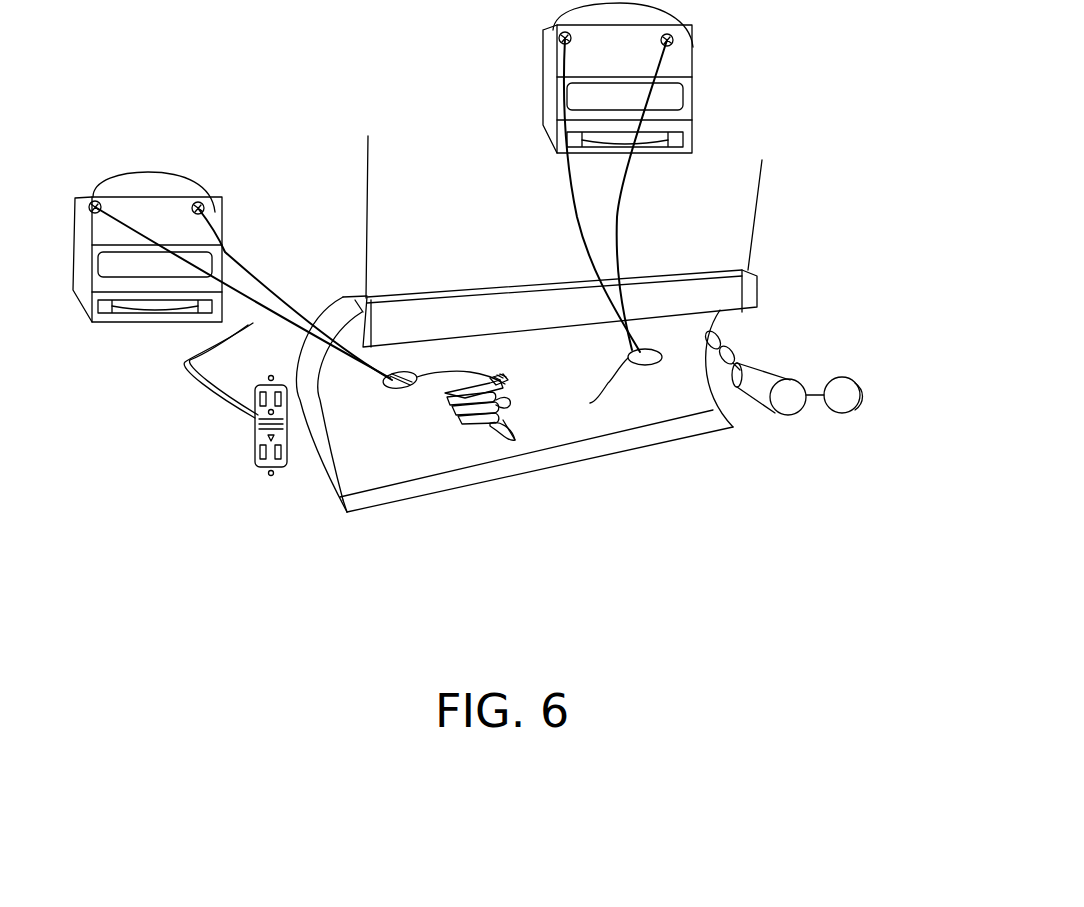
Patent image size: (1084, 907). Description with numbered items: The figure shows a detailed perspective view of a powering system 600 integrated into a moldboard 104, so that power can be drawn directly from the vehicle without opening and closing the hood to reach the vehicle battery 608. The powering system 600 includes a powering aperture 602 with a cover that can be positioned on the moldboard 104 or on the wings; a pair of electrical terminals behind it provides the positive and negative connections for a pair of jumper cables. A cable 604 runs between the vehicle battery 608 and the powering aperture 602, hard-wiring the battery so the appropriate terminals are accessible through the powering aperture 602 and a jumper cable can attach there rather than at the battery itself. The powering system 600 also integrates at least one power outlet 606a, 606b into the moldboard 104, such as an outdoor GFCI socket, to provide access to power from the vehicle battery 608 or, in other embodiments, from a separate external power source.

The moldboard 104 is at (593, 423).
The powering system 600 is at (473, 517).
The powering aperture 602 is at (505, 378).
The cable 604 is at (183, 388).
The power outlet 606a is at (267, 477).
The power outlet 606b is at (777, 370).
The vehicle battery 608 is at (143, 172).